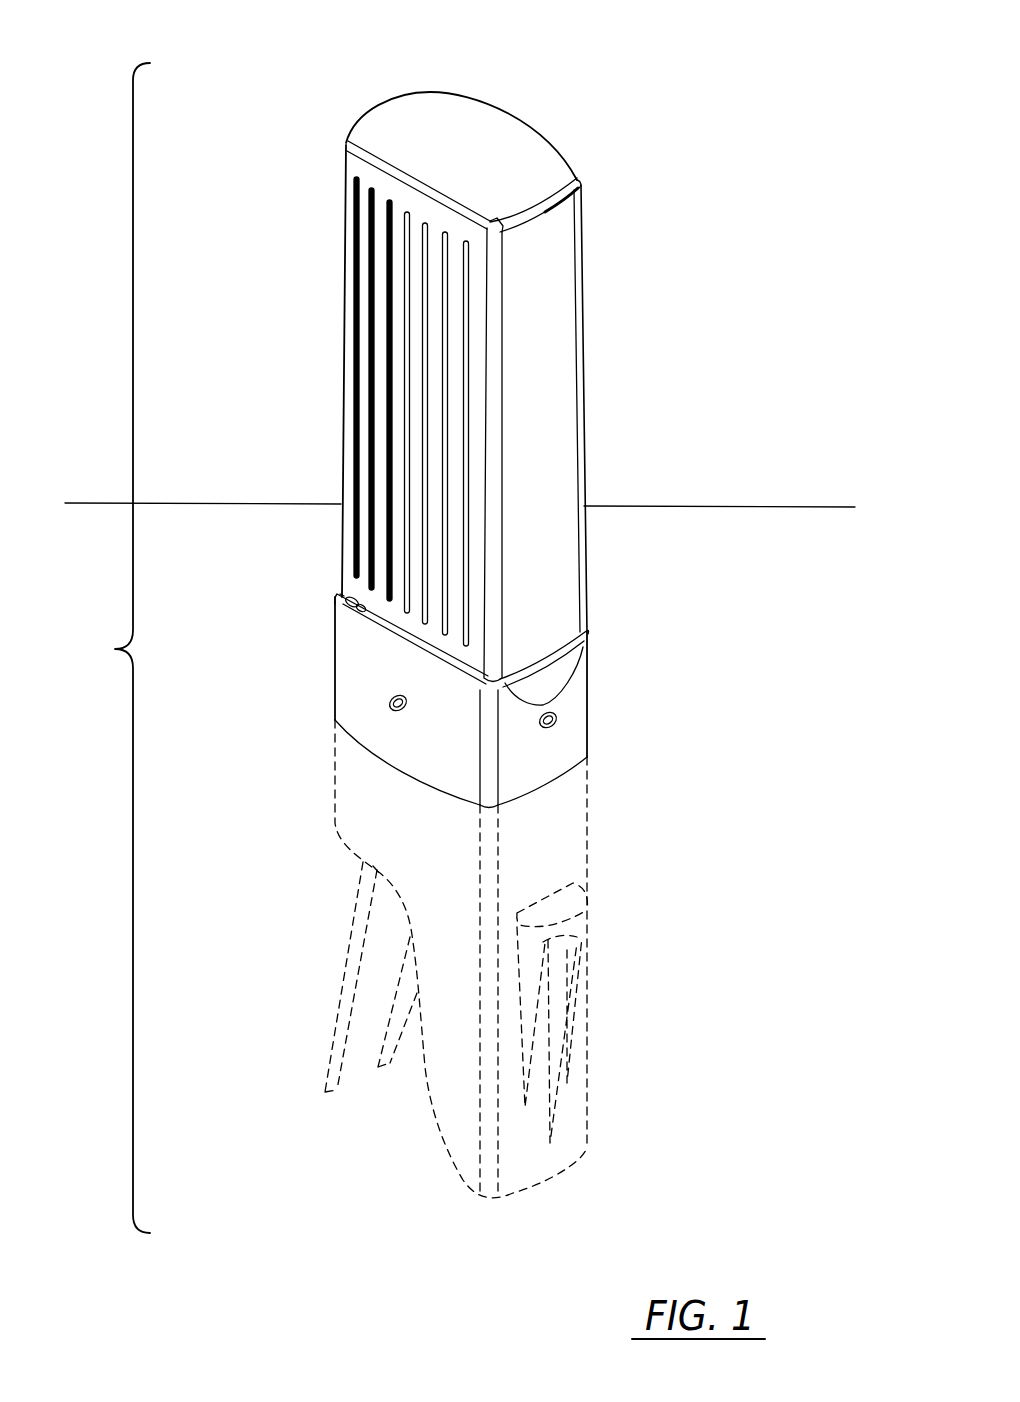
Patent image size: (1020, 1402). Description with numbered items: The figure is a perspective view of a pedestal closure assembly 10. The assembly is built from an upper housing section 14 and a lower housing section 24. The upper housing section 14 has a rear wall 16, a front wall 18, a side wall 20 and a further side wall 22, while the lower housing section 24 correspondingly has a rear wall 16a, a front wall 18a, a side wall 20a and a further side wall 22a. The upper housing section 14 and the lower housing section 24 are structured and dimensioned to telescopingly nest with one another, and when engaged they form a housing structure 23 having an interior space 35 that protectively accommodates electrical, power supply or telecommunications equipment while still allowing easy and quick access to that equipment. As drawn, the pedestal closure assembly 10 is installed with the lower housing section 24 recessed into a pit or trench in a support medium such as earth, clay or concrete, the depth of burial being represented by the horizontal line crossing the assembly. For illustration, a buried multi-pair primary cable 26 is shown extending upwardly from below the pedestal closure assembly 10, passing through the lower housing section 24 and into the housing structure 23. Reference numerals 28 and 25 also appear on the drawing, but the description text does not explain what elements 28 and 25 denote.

The pedestal closure assembly 10 is at (616, 162).
The interior space 35 is at (425, 150).
The front wall 18 is at (345, 243).
The side wall 20 is at (383, 343).
The upper housing section 14 is at (332, 458).
The side wall 22 is at (580, 300).
The rear wall 16 is at (545, 413).
The latch 28 is at (325, 578).
The housing structure 23 is at (114, 648).
The front wall 18a is at (335, 635).
The side wall 22a is at (590, 685).
The bottom edge of base collar 25 is at (580, 765).
The rear wall 16a is at (560, 845).
The side wall 20a is at (362, 803).
The buried multi-pair primary cable 26 is at (337, 1068).
The lower housing section 24 is at (600, 1034).